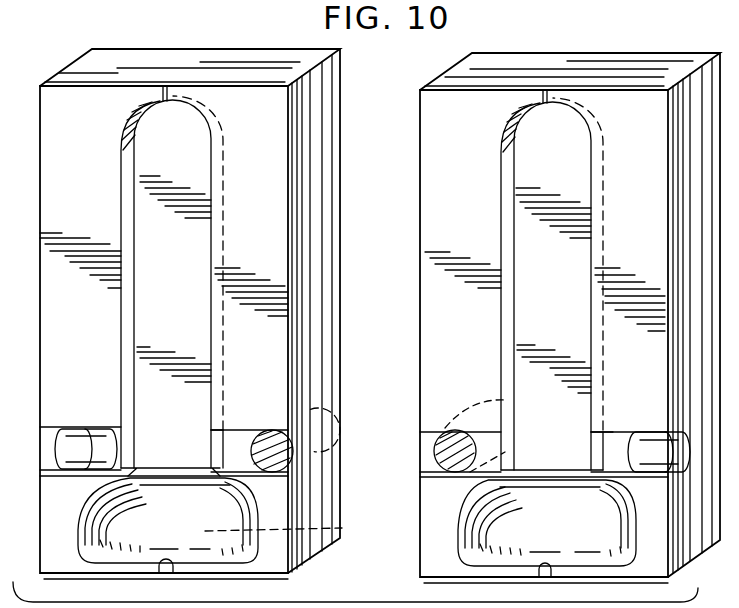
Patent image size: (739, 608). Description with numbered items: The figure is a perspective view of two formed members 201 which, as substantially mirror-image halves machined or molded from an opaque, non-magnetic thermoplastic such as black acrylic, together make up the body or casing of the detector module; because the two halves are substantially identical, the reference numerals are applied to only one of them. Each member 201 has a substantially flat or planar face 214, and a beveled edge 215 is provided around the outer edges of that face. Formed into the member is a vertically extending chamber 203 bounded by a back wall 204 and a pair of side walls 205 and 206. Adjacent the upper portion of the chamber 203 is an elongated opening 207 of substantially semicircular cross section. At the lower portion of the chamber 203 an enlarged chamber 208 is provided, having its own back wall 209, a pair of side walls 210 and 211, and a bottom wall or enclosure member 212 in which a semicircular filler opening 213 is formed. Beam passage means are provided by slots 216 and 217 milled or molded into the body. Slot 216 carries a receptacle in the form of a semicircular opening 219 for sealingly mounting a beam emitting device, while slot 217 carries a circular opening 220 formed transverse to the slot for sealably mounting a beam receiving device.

The member 201 is at (113, 55).
The chamber 203 is at (200, 273).
The back wall 204 is at (190, 218).
The side wall 205 is at (205, 192).
The side wall 206 is at (127, 180).
The elongated opening 207 is at (165, 88).
The enlarged chamber 208 is at (202, 528).
The back wall 209 is at (145, 496).
The side wall 210 is at (312, 531).
The side wall 211 is at (98, 525).
The bottom wall 212 is at (225, 552).
The filler opening 213 is at (165, 571).
The face 214 is at (58, 271).
The beveled edge 215 is at (75, 82).
The slot 216 is at (118, 443).
The slot 217 is at (222, 450).
The semicircular opening 219 is at (78, 440).
The circular opening 220 is at (265, 435).